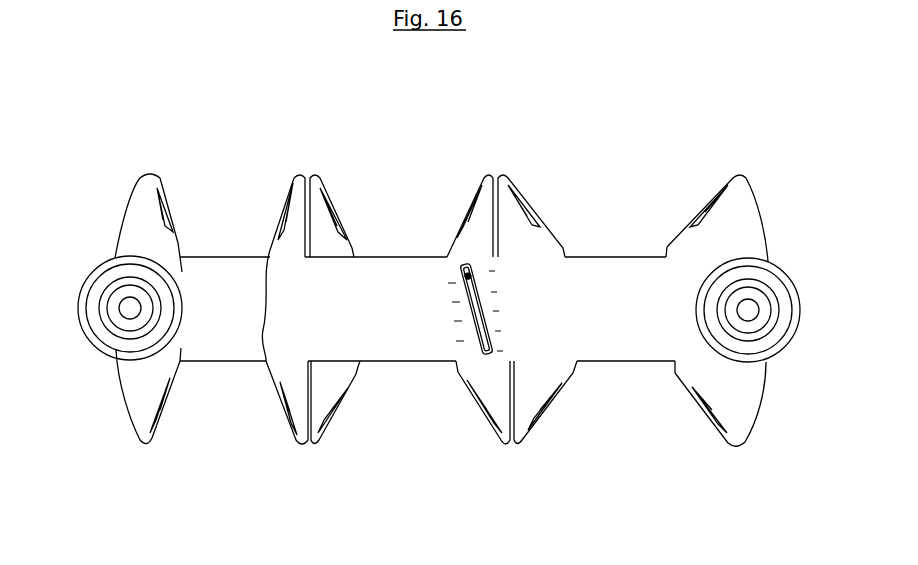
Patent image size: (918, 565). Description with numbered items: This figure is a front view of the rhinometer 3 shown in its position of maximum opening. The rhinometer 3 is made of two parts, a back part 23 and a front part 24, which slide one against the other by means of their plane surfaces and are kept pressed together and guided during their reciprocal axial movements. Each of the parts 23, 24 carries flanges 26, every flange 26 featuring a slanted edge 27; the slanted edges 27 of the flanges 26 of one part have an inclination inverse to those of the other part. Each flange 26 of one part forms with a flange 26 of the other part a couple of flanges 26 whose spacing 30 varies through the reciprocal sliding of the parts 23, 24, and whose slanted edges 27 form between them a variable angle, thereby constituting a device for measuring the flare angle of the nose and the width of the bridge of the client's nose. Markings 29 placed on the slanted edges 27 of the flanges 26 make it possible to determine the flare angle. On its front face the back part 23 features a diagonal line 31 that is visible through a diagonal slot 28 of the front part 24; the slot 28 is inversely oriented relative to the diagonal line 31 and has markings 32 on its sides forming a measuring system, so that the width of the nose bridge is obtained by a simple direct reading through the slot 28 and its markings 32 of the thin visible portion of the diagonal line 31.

The rhinometer 3 is at (113, 186).
The back part 23 is at (100, 265).
The front part 24 is at (752, 300).
The flange 26 is at (150, 175).
The slanted edge 27 is at (270, 237).
The diagonal slot 28 is at (478, 356).
The markings 29 is at (290, 215).
The spacing 30 is at (395, 252).
The diagonal line 31 is at (465, 262).
The markings 32 is at (502, 285).